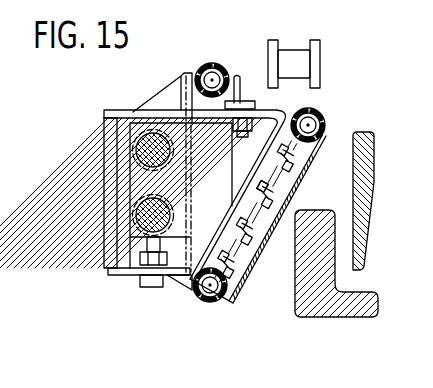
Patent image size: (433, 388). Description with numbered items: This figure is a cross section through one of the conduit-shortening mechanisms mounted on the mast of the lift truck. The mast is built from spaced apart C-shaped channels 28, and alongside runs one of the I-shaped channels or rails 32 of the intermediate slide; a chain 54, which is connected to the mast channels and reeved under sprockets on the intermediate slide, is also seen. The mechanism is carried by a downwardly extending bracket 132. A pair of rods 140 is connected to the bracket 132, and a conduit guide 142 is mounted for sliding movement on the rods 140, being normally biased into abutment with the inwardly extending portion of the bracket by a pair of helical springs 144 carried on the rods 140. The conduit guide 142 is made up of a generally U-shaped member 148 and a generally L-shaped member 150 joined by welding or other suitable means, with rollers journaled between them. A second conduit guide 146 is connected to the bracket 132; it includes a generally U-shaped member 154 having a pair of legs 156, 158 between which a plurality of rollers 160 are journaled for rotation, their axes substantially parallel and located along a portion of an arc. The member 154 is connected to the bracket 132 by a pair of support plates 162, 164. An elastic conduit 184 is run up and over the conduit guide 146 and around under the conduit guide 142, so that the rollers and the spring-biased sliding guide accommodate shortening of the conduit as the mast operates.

The C-shaped channel 28 is at (316, 305).
The I-shaped channel or rail 32 is at (374, 131).
The chain 54 is at (299, 65).
The bracket 132 is at (104, 186).
The rod 140 is at (140, 150).
The conduit guide 142 is at (200, 57).
The helical spring 144 is at (133, 161).
The conduit guide 146 is at (185, 308).
The U-shaped member 148 is at (179, 86).
The L-shaped member 150 is at (241, 76).
The U-shaped member 154 is at (260, 271).
The leg 156 is at (312, 168).
The leg 158 is at (251, 176).
The roller 160 is at (283, 204).
The support plate 162 is at (125, 112).
The support plate 164 is at (122, 270).
The elastic conduit 184 is at (218, 64).